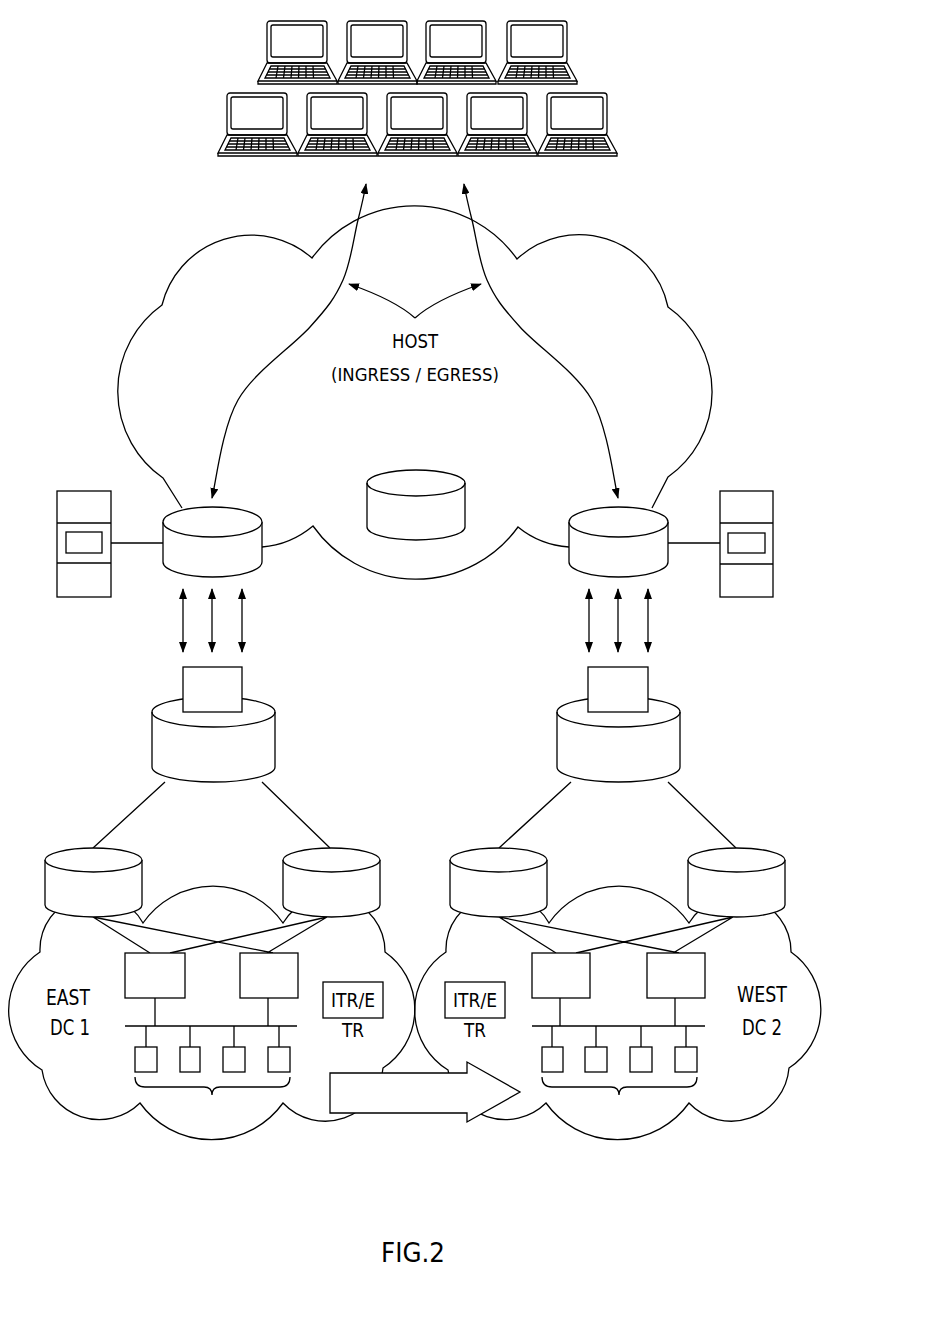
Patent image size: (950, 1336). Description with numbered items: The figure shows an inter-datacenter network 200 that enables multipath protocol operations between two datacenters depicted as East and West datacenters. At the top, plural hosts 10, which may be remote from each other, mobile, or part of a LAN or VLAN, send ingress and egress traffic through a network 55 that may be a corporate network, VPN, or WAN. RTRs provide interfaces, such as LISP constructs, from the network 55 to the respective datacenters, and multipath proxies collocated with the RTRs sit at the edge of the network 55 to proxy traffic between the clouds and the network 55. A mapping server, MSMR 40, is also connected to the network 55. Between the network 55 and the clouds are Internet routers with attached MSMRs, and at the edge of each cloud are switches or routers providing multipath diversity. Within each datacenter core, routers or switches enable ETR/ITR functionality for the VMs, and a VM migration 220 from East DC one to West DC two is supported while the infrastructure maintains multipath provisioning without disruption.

The hosts 10 is at (606, 113).
The inter-datacenter network 200 is at (68, 200).
The network 55 is at (641, 258).
The MSMR 40 is at (405, 468).
The virtual machine migration 220 is at (398, 1114).